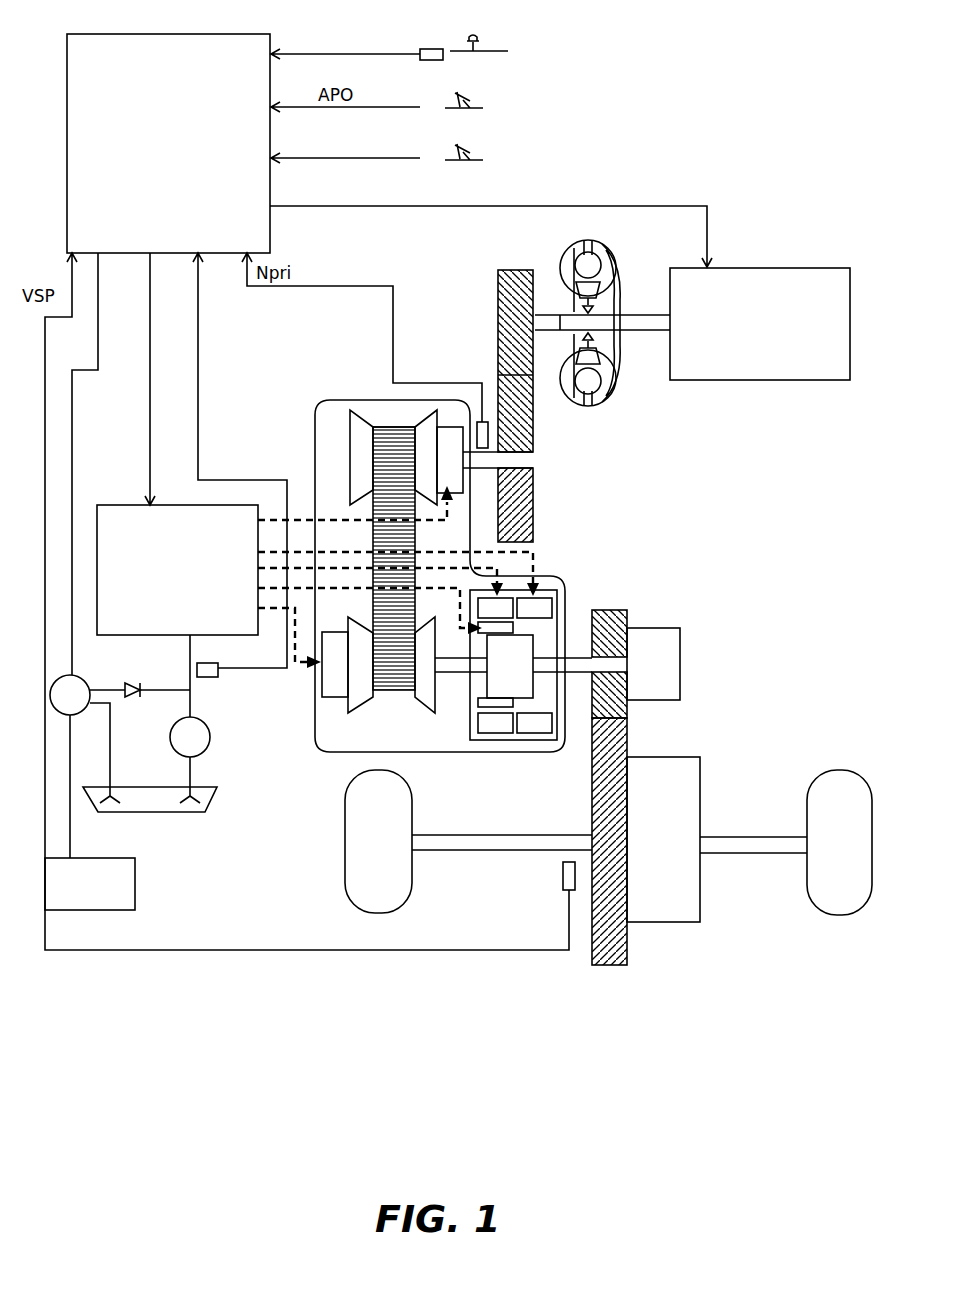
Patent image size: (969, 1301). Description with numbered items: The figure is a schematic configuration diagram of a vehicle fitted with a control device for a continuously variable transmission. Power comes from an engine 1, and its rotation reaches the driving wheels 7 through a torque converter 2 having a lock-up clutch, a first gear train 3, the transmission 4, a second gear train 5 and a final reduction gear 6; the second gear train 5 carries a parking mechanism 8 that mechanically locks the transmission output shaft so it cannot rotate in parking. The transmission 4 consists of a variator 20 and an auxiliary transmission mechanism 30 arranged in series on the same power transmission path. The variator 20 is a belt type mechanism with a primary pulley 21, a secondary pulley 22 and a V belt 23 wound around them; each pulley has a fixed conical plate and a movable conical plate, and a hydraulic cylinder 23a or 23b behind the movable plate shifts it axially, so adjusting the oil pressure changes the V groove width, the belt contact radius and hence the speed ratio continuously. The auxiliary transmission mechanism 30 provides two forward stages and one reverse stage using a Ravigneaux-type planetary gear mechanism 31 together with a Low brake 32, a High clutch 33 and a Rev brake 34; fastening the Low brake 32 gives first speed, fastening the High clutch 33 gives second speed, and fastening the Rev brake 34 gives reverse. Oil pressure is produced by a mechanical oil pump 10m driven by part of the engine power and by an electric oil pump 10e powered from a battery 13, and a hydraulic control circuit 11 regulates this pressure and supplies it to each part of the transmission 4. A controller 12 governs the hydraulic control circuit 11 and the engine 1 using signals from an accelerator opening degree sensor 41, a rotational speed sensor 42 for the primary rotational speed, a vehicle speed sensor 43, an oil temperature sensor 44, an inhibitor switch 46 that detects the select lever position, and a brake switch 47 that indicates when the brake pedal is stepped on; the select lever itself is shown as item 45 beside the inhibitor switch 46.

The engine 1 is at (835, 285).
The torque converter 2 is at (610, 272).
The first gear train 3 is at (524, 258).
The transmission 4 is at (372, 402).
The second gear train 5 is at (614, 977).
The final reduction gear 6 is at (660, 912).
The driving wheels 7 is at (378, 906).
The parking mechanism 8 is at (665, 652).
The electric oil pump 10e is at (88, 680).
The mechanical oil pump 10m is at (175, 752).
The hydraulic control circuit 11 is at (107, 505).
The controller 12 is at (263, 35).
The battery 13 is at (135, 870).
The variator 20 is at (330, 403).
The primary pulley 21 is at (365, 462).
The secondary pulley 22 is at (380, 690).
The V belt 23 is at (395, 425).
The hydraulic cylinder 23a is at (446, 440).
The hydraulic cylinder 23b is at (335, 670).
The auxiliary transmission mechanism 30 is at (536, 624).
The Ravigneaux-type planetary gear mechanism 31 is at (520, 665).
The Low brake 32 is at (500, 600).
The High clutch 33 is at (495, 705).
The Rev brake 34 is at (540, 600).
The accelerator opening degree sensor 41 is at (430, 110).
The rotational speed sensor 42 is at (483, 420).
The vehicle speed sensor 43 is at (563, 875).
The oil temperature sensor 44 is at (212, 672).
The shift lever 45 is at (484, 48).
The inhibitor switch 46 is at (436, 49).
The brake switch 47 is at (430, 162).